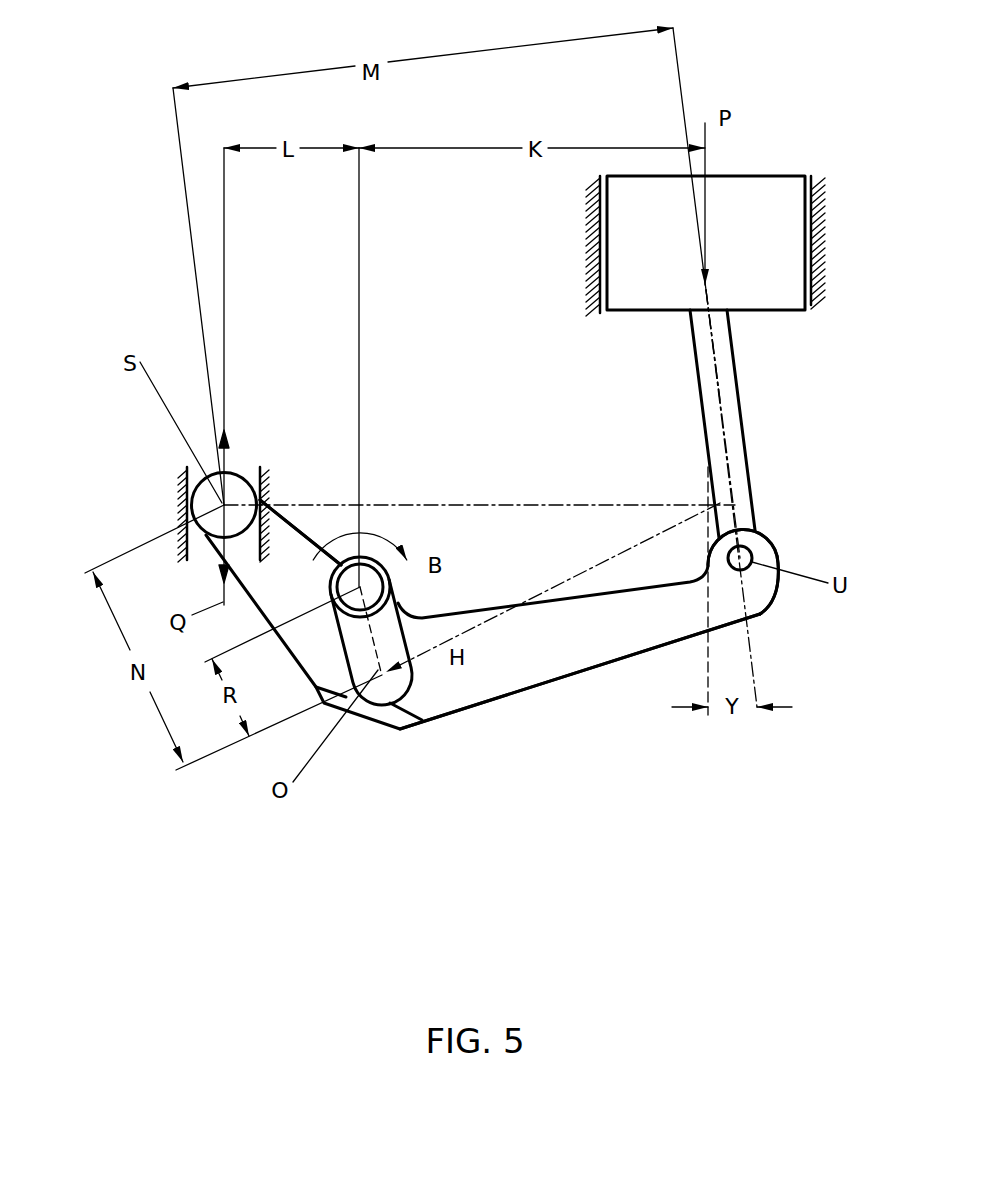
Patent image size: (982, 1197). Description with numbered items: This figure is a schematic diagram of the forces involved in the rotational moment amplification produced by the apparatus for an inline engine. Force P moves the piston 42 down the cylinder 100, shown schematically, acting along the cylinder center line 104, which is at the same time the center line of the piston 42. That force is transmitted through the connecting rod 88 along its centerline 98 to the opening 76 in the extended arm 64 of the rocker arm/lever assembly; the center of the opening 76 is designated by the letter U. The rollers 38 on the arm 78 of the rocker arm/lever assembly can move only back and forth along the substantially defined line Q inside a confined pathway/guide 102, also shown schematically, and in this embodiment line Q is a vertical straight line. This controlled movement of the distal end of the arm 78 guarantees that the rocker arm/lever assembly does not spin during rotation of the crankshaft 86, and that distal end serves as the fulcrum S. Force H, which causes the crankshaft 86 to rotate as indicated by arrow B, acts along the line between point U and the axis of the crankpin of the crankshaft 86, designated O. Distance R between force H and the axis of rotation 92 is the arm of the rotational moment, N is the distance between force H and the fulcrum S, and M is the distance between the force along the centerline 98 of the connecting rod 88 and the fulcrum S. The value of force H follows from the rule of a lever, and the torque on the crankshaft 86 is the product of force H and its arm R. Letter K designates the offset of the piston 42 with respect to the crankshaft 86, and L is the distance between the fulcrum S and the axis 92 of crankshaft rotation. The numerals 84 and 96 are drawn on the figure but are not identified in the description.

The rollers 38 is at (235, 473).
The piston 42 is at (748, 176).
The extended arm 64 is at (557, 683).
The opening 76 is at (753, 553).
The arm 78 is at (305, 534).
The lever arm 84 is at (457, 746).
The crankshaft 86 is at (403, 630).
The connecting rod 88 is at (743, 417).
The axis 92 is at (360, 587).
The rounded end 96 is at (710, 607).
The centerline 98 is at (730, 460).
The cylinder 100 is at (600, 312).
The confined pathway/guide 102 is at (185, 467).
The cylinder center line 104 is at (707, 350).